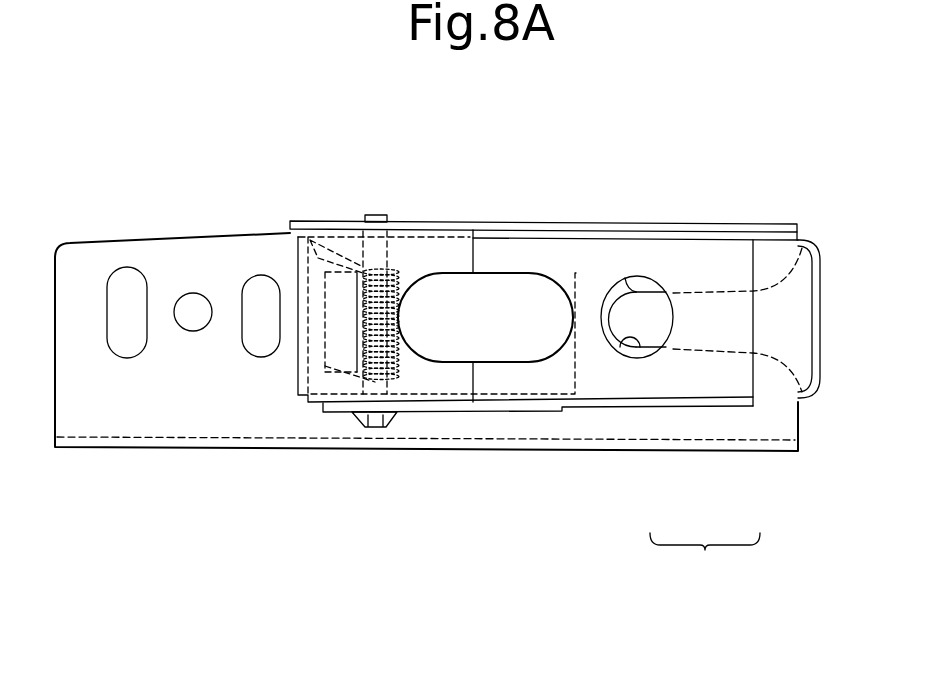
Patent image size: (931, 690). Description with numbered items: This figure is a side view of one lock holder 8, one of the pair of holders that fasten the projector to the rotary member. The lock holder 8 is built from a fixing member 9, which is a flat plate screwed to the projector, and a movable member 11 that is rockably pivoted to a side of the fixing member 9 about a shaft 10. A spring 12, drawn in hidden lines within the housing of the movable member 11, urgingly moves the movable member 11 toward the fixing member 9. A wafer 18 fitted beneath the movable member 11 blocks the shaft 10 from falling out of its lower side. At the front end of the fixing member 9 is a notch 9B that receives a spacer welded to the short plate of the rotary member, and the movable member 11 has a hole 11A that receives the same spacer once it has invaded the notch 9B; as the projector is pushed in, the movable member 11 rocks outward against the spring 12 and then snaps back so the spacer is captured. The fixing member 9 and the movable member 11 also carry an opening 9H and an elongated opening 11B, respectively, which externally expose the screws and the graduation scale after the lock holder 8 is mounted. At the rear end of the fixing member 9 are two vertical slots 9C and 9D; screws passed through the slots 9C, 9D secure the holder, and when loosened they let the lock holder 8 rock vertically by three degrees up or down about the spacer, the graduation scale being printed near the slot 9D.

The lock holder 8 is at (705, 559).
The fixing member 9 is at (657, 432).
The notch 9B is at (636, 342).
The vertical slot 9C is at (263, 285).
The vertical slot 9D is at (131, 279).
The opening 9H is at (581, 287).
The shaft 10 is at (376, 214).
The movable member 11 is at (720, 382).
The hole 11A is at (640, 290).
The opening 11B is at (493, 276).
The spring 12 is at (325, 217).
The wafer 18 is at (387, 420).